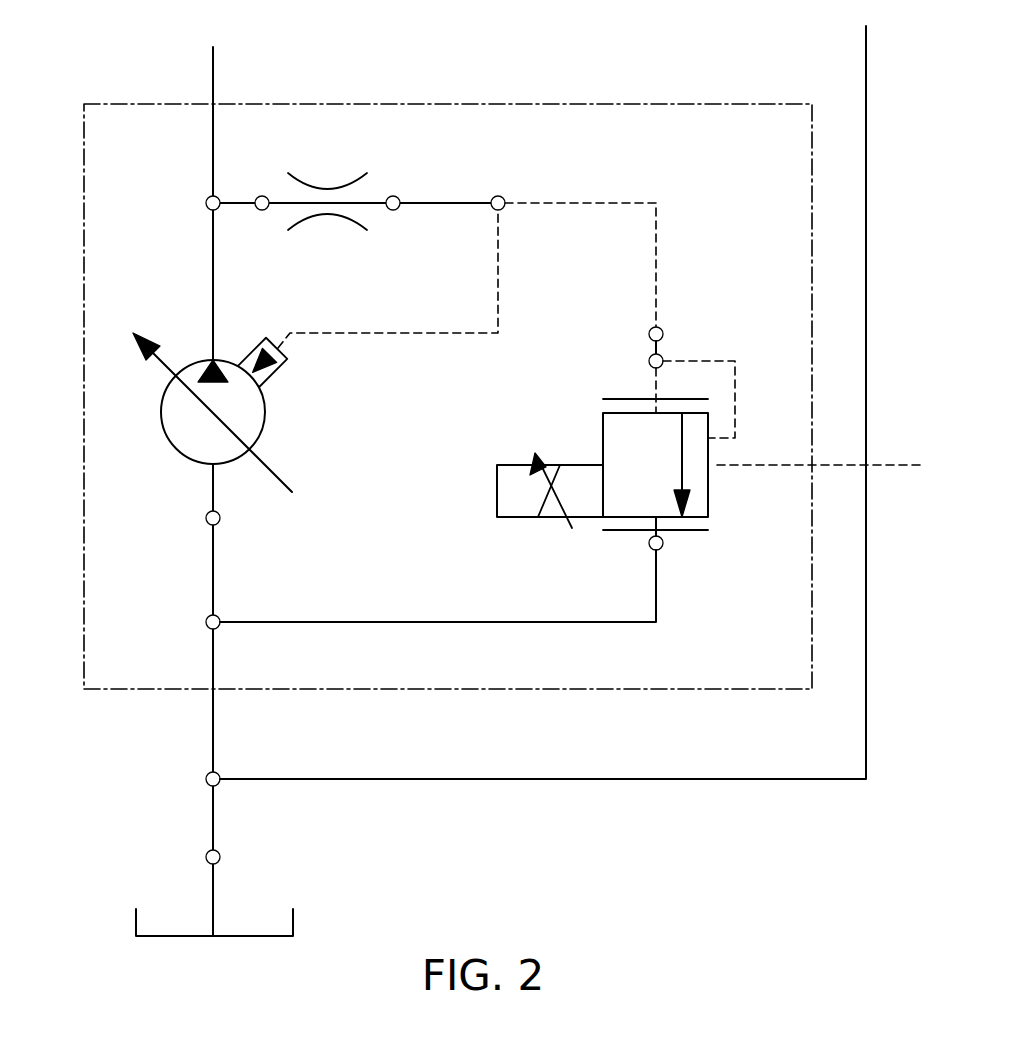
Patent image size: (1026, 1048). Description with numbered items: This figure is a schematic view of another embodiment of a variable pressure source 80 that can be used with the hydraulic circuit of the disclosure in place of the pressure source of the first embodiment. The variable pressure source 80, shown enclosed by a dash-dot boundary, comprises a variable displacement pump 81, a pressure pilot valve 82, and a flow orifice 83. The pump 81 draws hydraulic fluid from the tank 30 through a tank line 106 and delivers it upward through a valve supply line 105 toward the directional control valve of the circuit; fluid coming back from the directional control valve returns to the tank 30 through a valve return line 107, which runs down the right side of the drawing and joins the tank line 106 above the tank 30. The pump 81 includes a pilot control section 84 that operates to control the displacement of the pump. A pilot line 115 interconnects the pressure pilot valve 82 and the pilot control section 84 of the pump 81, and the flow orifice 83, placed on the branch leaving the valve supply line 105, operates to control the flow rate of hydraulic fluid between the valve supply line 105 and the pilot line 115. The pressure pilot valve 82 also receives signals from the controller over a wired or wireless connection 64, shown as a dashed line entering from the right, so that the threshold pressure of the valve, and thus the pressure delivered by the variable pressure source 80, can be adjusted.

The tank 30 is at (245, 936).
The wired or wireless connection 64 is at (896, 465).
The variable pressure source 80 is at (84, 470).
The variable displacement pump 81 is at (192, 462).
The pressure pilot valve 82 is at (708, 492).
The flow orifice 83 is at (366, 176).
The pilot control section 84 is at (272, 372).
The valve supply line 105 is at (213, 85).
The tank line 106 is at (213, 727).
The valve return line 107 is at (866, 118).
The pilot line 115 is at (590, 203).